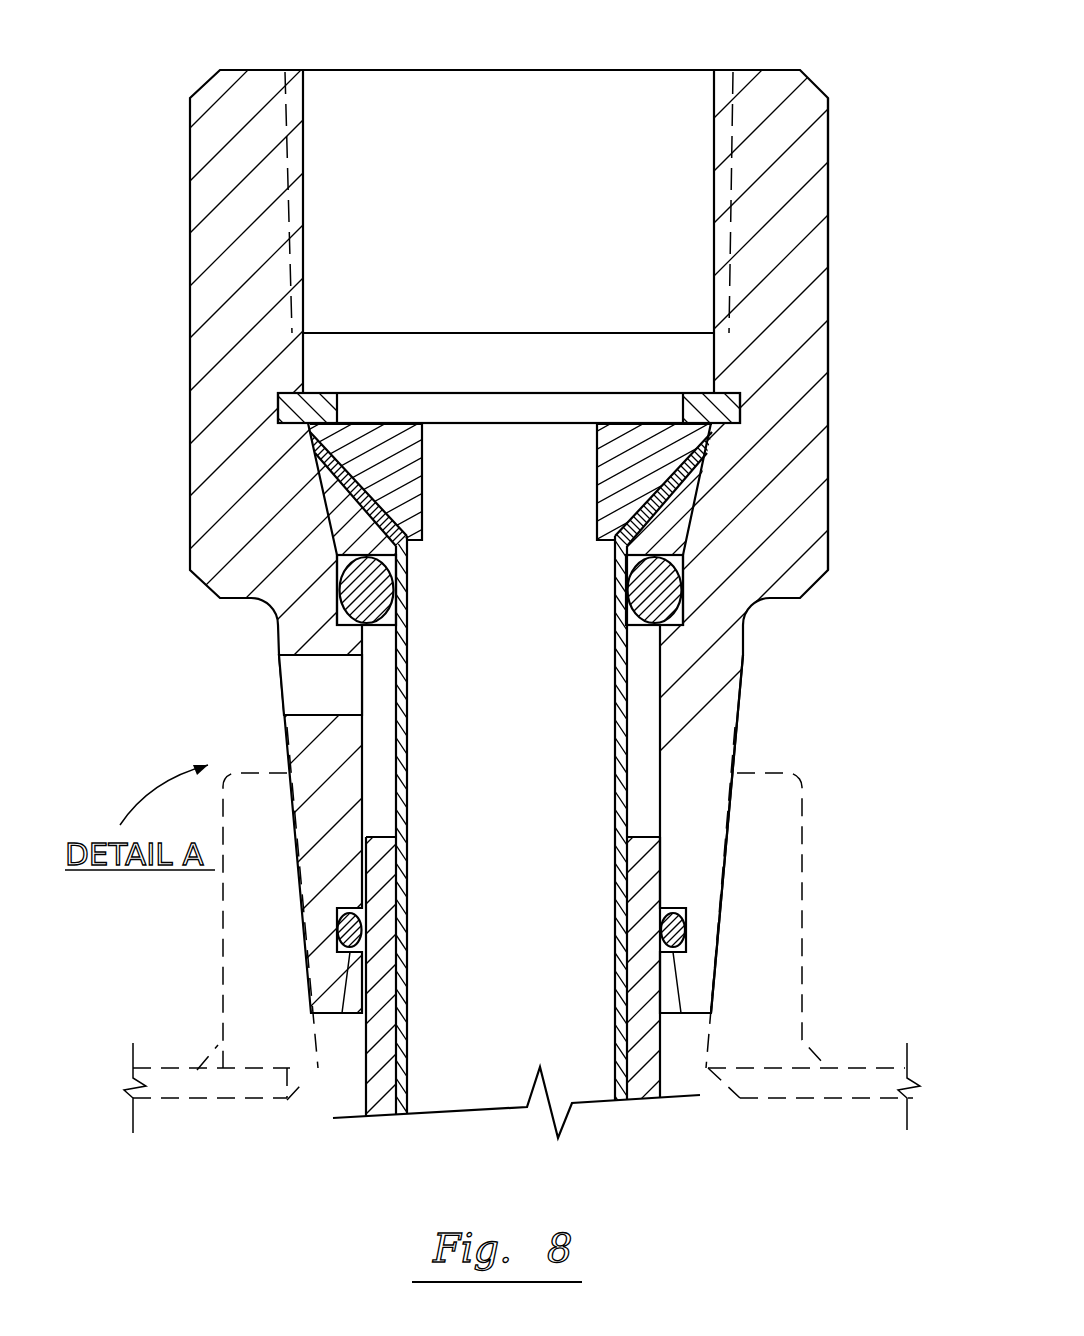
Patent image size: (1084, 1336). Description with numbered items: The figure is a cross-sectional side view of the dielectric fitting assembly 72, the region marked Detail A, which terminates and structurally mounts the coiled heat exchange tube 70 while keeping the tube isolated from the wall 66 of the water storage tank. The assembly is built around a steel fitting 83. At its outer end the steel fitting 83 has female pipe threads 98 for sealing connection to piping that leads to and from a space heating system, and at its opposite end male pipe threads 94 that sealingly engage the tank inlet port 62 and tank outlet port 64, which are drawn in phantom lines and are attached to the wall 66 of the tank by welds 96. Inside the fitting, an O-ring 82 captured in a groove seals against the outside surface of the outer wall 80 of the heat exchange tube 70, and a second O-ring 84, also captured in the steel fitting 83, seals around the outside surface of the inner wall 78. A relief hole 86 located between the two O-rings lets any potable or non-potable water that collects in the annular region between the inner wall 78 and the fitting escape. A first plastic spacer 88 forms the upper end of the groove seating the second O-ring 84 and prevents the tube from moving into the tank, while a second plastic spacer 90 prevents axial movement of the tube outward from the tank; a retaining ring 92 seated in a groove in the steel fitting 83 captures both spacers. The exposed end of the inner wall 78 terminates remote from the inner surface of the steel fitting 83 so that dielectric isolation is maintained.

The dielectric fitting assembly 72 is at (858, 210).
The steel fitting 83 is at (828, 339).
The female pipe threads 98 is at (300, 147).
The retaining ring 92 is at (278, 403).
The second plastic spacer 90 is at (712, 434).
The first plastic spacer 88 is at (325, 508).
The second O-ring 84 is at (687, 573).
The relief hole 86 is at (312, 656).
The male pipe threads 94 is at (735, 832).
The O-ring 82 is at (337, 942).
The inner wall 78 is at (410, 1067).
The outer wall 80 is at (380, 1103).
The heat exchange tube 70 is at (358, 1087).
The tank inlet port 62 is at (802, 897).
The tank outlet port 64 is at (242, 921).
The wall 66 is at (848, 1068).
The welds 96 is at (817, 1060).